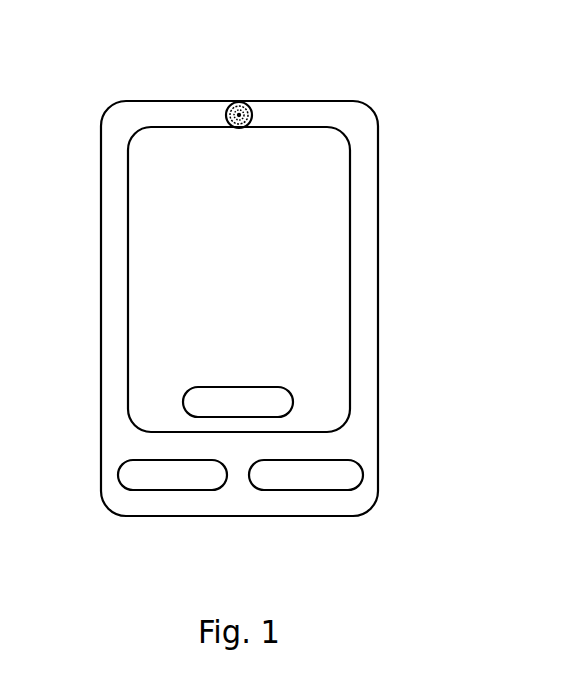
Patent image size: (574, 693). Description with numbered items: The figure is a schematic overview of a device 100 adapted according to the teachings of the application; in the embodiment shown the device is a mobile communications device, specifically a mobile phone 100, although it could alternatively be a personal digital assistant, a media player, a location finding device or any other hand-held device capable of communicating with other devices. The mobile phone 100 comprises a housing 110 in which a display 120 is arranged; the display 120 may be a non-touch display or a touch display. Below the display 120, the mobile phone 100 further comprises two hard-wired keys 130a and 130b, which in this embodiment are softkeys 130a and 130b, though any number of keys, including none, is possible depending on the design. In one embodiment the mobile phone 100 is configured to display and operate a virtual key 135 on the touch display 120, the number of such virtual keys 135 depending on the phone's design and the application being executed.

The mobile phone 100 is at (122, 84).
The housing 110 is at (378, 212).
The display 120 is at (350, 282).
The virtual key 135 is at (293, 402).
The hard-wired key 130a is at (172, 490).
The hard-wired key 130b is at (363, 476).